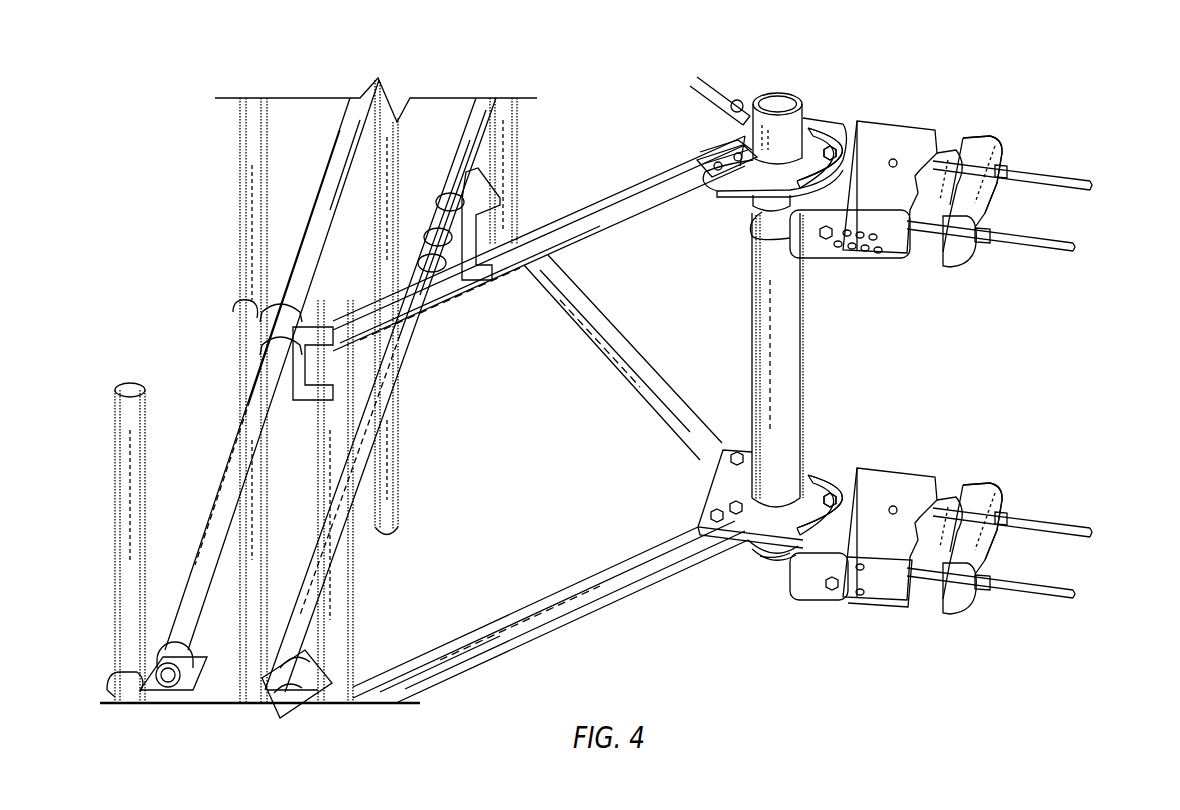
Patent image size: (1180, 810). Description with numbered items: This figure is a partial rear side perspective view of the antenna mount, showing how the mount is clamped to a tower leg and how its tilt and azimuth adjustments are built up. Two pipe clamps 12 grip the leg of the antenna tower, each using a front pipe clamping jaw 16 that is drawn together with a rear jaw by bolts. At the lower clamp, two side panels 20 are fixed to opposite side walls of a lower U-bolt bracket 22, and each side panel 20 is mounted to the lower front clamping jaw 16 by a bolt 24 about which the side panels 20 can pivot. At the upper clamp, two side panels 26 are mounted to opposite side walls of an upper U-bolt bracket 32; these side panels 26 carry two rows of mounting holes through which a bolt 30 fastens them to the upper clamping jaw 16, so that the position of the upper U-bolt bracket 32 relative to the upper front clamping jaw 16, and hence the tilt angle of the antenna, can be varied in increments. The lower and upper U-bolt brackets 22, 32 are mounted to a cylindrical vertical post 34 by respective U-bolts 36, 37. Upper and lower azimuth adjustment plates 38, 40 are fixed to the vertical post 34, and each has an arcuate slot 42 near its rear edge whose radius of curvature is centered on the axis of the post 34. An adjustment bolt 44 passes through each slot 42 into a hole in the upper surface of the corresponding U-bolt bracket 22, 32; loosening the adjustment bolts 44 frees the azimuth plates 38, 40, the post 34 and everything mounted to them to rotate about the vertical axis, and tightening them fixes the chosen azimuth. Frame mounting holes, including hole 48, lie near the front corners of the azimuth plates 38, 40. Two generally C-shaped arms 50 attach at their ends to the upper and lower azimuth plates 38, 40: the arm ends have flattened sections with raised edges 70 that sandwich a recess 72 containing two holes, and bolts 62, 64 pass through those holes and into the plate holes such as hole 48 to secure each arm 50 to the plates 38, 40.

The pipe clamp 12 is at (1100, 253).
The front pipe clamping jaw 16 is at (927, 123).
The side panel 20 is at (803, 598).
The lower U-bolt bracket 22 is at (780, 557).
The bolt 24 is at (835, 600).
The side panel 26 is at (880, 262).
The bolt 30 is at (828, 237).
The upper U-bolt bracket 32 is at (886, 120).
The cylindrical vertical post 34 is at (793, 410).
The U-bolt 36 is at (760, 567).
The U-bolt 37 is at (772, 243).
The upper azimuth adjustment plate 38 is at (736, 186).
The lower azimuth adjustment plate 40 is at (697, 537).
The arcuate slot 42 is at (826, 122).
The adjustment bolt 44 is at (842, 132).
The frame mounting hole 48 is at (700, 160).
The C-shaped arm 50 is at (507, 273).
The bolt 62 is at (740, 148).
The bolt 64 is at (716, 150).
The raised edge 70 is at (765, 96).
The recess 72 is at (738, 82).